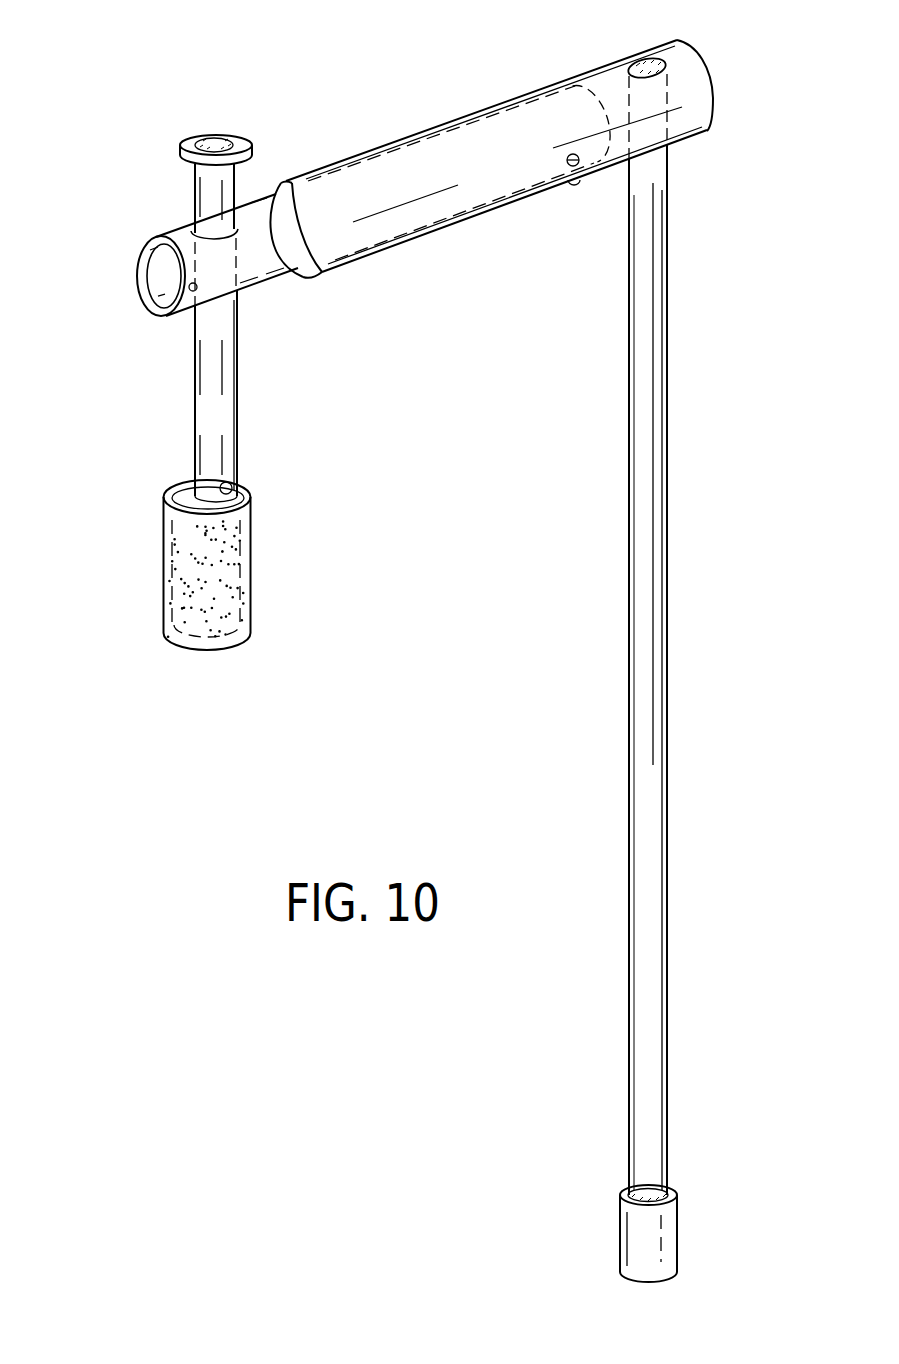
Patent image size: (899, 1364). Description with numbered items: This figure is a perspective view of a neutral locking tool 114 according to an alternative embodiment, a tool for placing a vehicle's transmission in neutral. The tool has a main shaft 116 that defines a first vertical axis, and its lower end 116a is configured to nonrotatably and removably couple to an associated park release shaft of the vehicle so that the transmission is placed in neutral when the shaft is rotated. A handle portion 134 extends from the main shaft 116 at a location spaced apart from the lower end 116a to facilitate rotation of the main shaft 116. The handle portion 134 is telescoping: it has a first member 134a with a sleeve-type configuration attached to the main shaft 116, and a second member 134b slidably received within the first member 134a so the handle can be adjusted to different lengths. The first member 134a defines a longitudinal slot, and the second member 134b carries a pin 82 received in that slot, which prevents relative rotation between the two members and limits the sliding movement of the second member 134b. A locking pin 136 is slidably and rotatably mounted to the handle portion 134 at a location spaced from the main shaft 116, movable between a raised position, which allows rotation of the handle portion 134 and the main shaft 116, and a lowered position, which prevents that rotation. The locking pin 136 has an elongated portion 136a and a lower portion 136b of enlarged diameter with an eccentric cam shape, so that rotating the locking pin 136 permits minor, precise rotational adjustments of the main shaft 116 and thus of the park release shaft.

The neutral locking tool 114 is at (108, 110).
The handle portion 134 is at (395, 120).
The first member 134a is at (593, 70).
The second member 134b is at (281, 280).
The pin 82 is at (575, 186).
The main shaft 116 is at (640, 600).
The lower end 116a is at (652, 1190).
The locking pin 136 is at (212, 382).
The elongated portion 136a is at (230, 413).
The lower portion 136b is at (188, 495).